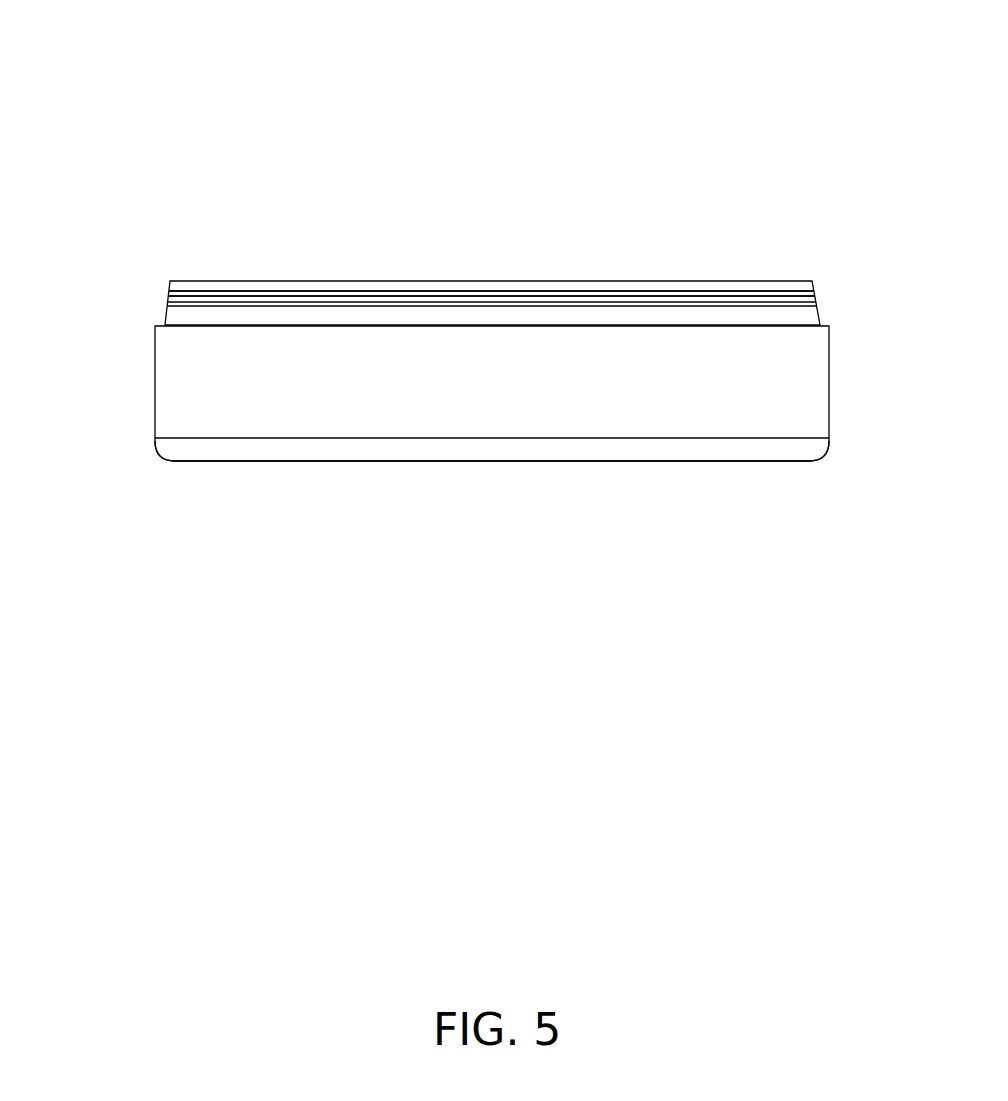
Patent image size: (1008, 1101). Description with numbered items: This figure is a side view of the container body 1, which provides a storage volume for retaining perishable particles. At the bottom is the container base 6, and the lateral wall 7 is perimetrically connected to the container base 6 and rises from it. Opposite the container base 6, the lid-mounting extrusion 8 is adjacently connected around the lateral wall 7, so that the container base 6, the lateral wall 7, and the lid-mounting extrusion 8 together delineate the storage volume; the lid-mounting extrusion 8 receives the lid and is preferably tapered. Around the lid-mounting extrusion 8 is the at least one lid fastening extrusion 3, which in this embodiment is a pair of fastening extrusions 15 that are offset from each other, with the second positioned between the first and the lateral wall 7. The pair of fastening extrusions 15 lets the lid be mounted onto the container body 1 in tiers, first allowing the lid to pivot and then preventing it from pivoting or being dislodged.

The container body 1 is at (272, 55).
The lid fastening extrusion 3 is at (84, 285).
The container base 6 is at (475, 450).
The lateral wall 7 is at (818, 388).
The lid-mounting extrusion 8 is at (818, 318).
The pair of fastening extrusions 15 is at (165, 305).